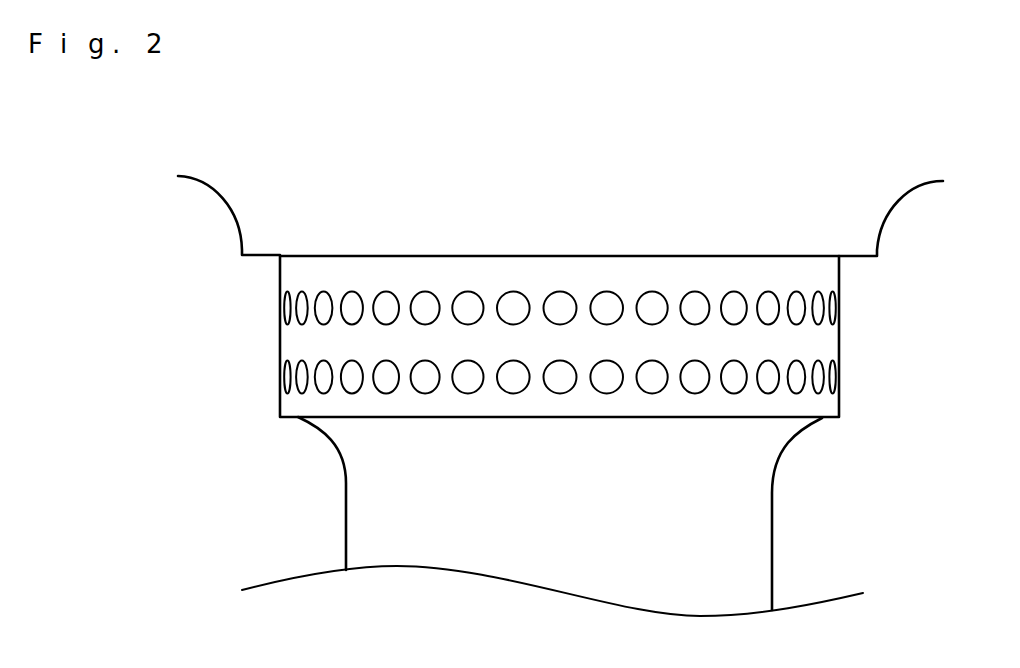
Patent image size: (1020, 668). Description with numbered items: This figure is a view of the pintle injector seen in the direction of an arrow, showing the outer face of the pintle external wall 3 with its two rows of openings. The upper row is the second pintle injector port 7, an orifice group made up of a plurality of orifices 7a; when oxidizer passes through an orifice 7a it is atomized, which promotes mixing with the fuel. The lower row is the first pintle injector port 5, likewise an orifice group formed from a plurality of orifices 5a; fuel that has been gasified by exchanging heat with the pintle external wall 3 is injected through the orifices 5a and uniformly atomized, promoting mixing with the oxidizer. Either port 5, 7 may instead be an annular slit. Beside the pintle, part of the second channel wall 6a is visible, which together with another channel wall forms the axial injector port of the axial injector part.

The pintle external wall 3 is at (377, 442).
The first pintle injector port 5 is at (566, 427).
The orifice 5a is at (771, 381).
The second channel wall 6a is at (282, 207).
The second pintle injector port 7 is at (565, 257).
The orifice 7a is at (801, 257).